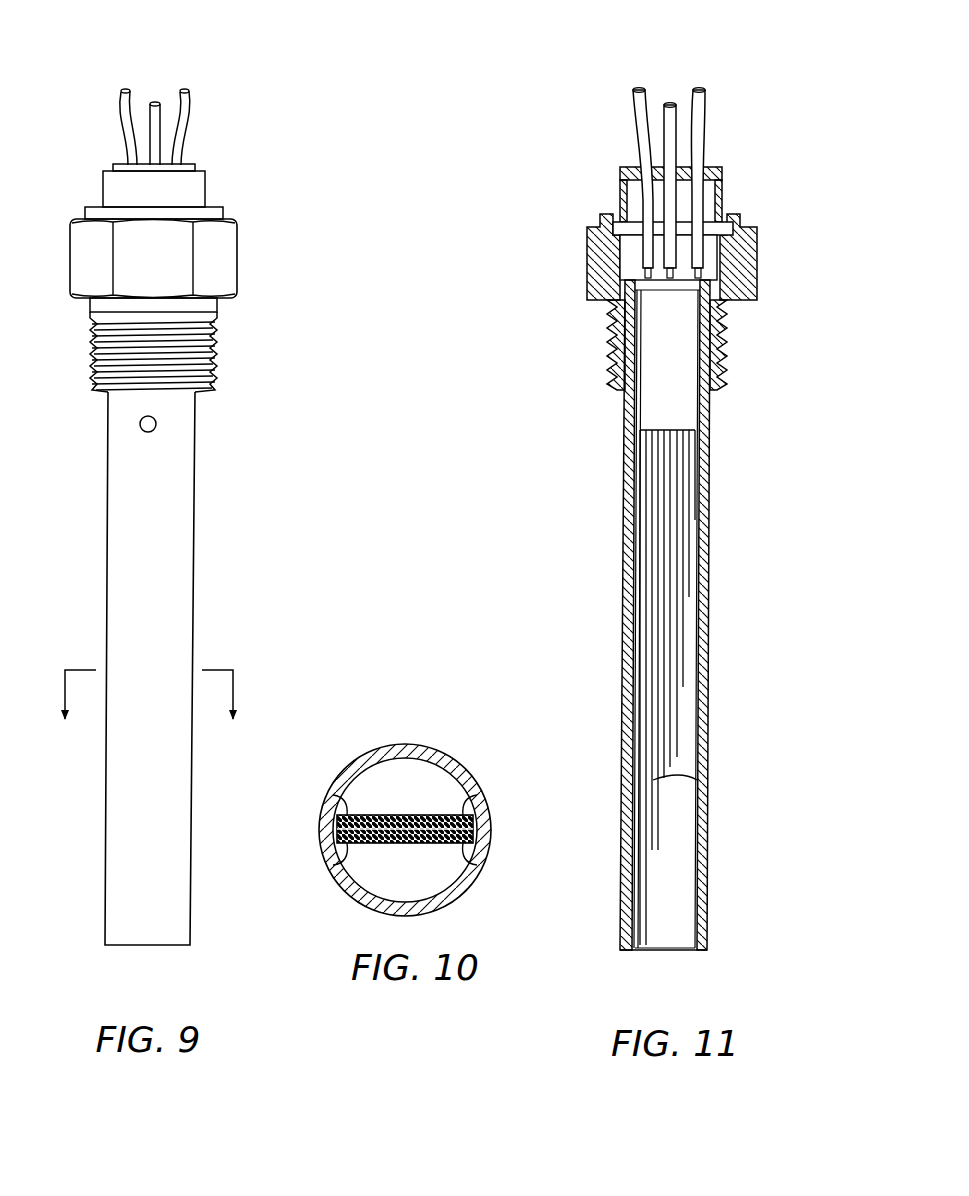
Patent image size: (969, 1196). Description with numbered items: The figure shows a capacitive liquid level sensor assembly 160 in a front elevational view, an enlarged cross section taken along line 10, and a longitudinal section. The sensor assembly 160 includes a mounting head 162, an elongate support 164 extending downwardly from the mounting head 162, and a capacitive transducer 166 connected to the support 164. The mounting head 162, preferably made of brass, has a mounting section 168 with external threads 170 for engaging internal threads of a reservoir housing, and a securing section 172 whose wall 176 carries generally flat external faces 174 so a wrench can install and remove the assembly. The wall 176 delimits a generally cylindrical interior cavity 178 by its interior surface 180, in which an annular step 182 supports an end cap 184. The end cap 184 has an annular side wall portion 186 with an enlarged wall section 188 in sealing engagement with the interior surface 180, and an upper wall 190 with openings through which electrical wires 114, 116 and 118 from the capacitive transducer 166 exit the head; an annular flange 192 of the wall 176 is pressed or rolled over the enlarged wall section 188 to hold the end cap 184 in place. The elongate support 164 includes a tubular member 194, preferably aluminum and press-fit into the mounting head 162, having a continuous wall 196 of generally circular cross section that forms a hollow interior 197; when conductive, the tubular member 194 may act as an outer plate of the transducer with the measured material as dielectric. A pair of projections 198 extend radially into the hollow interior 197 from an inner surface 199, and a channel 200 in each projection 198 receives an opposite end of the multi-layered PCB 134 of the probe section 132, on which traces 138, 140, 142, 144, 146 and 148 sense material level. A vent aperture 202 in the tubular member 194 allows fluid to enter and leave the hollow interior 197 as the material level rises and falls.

In FIG. 9, the section line 10- 10 is at (150, 675).
In FIG. 9, the electrical wire 114 is at (123, 87).
In FIG. 11, the electrical wire 114 is at (635, 87).
In FIG. 9, the electrical wire 116 is at (154, 100).
In FIG. 11, the electrical wire 116 is at (670, 102).
In FIG. 9, the electrical wire 118 is at (192, 94).
In FIG. 11, the electrical wire 118 is at (704, 96).
In FIG. 11, the probe section 132 is at (700, 553).
In FIG. 10, the multi-layered PCB 134 is at (433, 815).
In FIG. 11, the multi-layered PCB 134 is at (685, 673).
In FIG. 11, the trace 138 is at (640, 852).
In FIG. 11, the trace 140 is at (697, 780).
In FIG. 11, the trace 142 is at (697, 720).
In FIG. 11, the trace 144 is at (672, 618).
In FIG. 11, the trace 146 is at (683, 523).
In FIG. 11, the trace 148 is at (696, 457).
In FIG. 9, the capacitive liquid level sensor assembly 160 is at (252, 157).
In FIG. 11, the capacitive liquid level sensor assembly 160 is at (566, 106).
In FIG. 9, the mounting head 162 is at (240, 236).
In FIG. 11, the mounting head 162 is at (759, 272).
In FIG. 9, the elongate support 164 is at (198, 478).
In FIG. 10, the elongate support 164 is at (458, 752).
In FIG. 11, the elongate support 164 is at (716, 490).
In FIG. 11, the capacitive transducer 166 is at (652, 954).
In FIG. 9, the mounting section 168 is at (216, 313).
In FIG. 11, the mounting section 168 is at (728, 318).
In FIG. 9, the external threads 170 is at (211, 377).
In FIG. 11, the external threads 170 is at (724, 380).
In FIG. 9, the securing section 172 is at (70, 237).
In FIG. 9, the external faces 174 is at (78, 272).
In FIG. 11, the external faces 174 is at (754, 290).
In FIG. 11, the wall 176 is at (605, 248).
In FIG. 11, the interior cavity 178 is at (622, 262).
In FIG. 11, the interior surface 180 is at (622, 255).
In FIG. 11, the annular step 182 is at (732, 258).
In FIG. 9, the end cap 184 is at (108, 190).
In FIG. 11, the end cap 184 is at (622, 186).
In FIG. 11, the annular side wall portion 186 is at (724, 180).
In FIG. 11, the enlarged wall section 188 is at (603, 222).
In FIG. 9, the upper wall 190 is at (117, 165).
In FIG. 11, the upper wall 190 is at (634, 167).
In FIG. 9, the annular flange 192 is at (218, 212).
In FIG. 11, the annular flange 192 is at (734, 221).
In FIG. 9, the tubular member 194 is at (177, 582).
In FIG. 10, the tubular member 194 is at (405, 745).
In FIG. 11, the tubular member 194 is at (707, 583).
In FIG. 10, the continuous wall 196 is at (450, 897).
In FIG. 10, the hollow interior 197 is at (378, 798).
In FIG. 11, the hollow interior 197 is at (700, 748).
In FIG. 10, the projections 198 is at (350, 867).
In FIG. 10, the inner surface 199 is at (383, 893).
In FIG. 10, the channel 200 is at (333, 828).
In FIG. 9, the vent aperture 202 is at (140, 424).